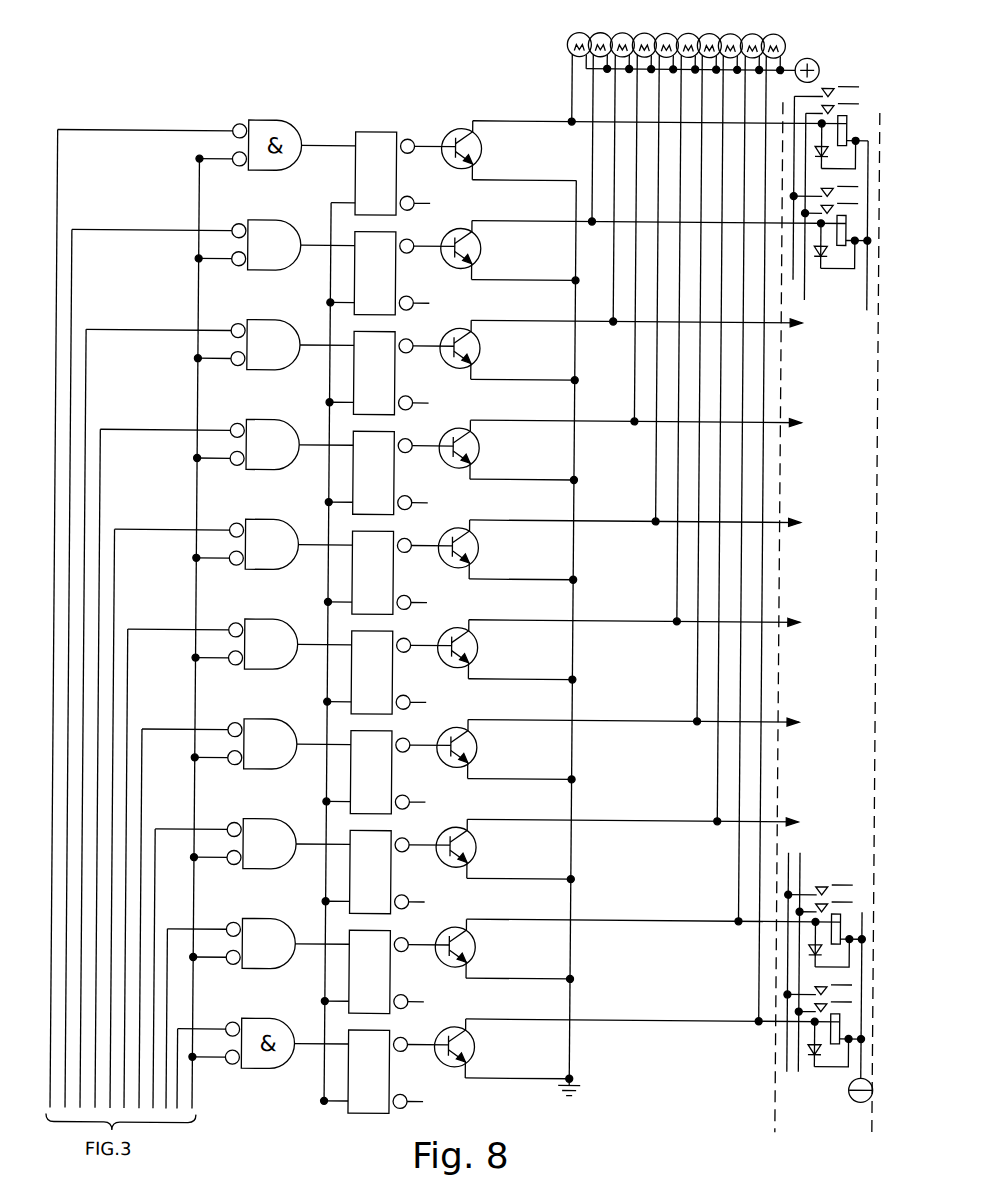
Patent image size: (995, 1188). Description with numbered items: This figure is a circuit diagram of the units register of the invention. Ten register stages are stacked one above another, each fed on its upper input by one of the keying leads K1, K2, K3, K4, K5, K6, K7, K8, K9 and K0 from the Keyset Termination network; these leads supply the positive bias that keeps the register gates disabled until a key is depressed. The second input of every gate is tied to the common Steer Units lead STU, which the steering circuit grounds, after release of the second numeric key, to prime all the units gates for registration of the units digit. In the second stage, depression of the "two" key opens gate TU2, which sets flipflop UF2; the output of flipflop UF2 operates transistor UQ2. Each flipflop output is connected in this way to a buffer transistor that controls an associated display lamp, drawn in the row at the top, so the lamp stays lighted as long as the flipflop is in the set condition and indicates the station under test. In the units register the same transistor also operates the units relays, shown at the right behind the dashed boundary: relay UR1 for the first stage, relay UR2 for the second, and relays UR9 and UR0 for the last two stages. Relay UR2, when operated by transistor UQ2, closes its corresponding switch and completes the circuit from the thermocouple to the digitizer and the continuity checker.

The keying lead K1 is at (190, 133).
The keying lead K2 is at (190, 233).
The keying lead K3 is at (190, 333).
The keying lead K4 is at (190, 433).
The keying lead K5 is at (190, 533).
The keying lead K6 is at (190, 633).
The keying lead K7 is at (190, 732).
The keying lead K8 is at (190, 832).
The keying lead K9 is at (190, 932).
The keying lead K0 is at (183, 1031).
The gate TU2 is at (289, 230).
The flipflop UF2 is at (398, 284).
The transistor UQ2 is at (438, 244).
The units relay UR1 is at (842, 103).
The relay UR2 is at (849, 201).
The units relay UR9 is at (841, 902).
The units relay UR0 is at (840, 995).
The Steer Units lead STU is at (197, 1101).